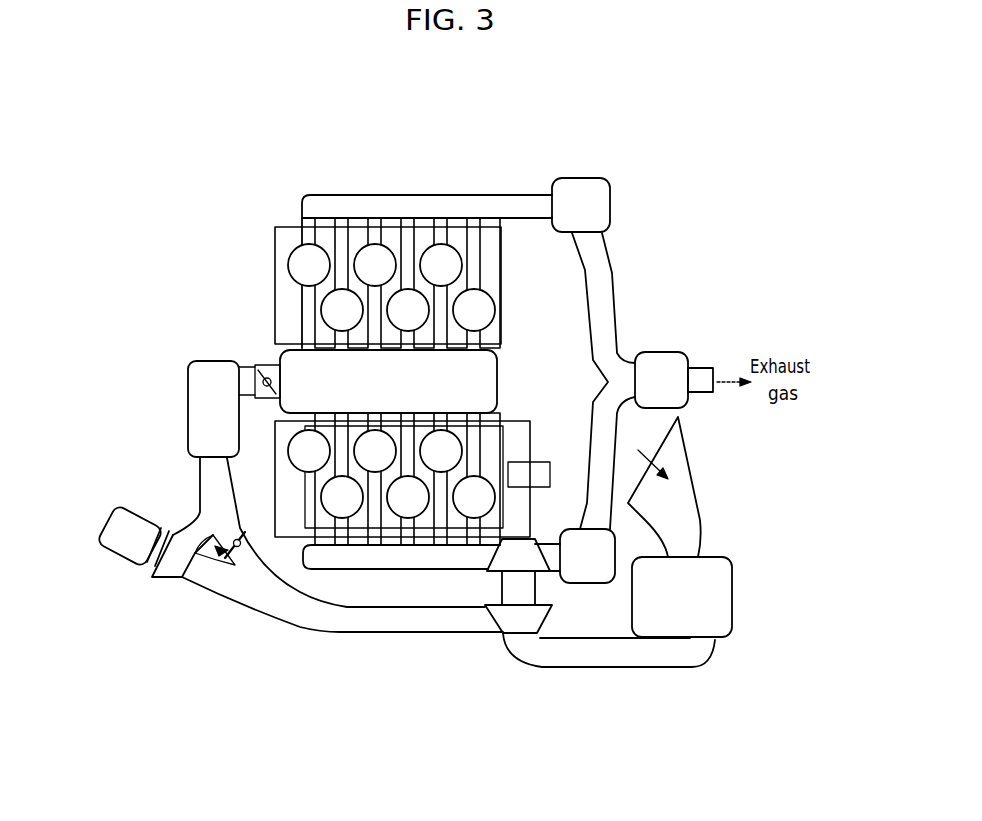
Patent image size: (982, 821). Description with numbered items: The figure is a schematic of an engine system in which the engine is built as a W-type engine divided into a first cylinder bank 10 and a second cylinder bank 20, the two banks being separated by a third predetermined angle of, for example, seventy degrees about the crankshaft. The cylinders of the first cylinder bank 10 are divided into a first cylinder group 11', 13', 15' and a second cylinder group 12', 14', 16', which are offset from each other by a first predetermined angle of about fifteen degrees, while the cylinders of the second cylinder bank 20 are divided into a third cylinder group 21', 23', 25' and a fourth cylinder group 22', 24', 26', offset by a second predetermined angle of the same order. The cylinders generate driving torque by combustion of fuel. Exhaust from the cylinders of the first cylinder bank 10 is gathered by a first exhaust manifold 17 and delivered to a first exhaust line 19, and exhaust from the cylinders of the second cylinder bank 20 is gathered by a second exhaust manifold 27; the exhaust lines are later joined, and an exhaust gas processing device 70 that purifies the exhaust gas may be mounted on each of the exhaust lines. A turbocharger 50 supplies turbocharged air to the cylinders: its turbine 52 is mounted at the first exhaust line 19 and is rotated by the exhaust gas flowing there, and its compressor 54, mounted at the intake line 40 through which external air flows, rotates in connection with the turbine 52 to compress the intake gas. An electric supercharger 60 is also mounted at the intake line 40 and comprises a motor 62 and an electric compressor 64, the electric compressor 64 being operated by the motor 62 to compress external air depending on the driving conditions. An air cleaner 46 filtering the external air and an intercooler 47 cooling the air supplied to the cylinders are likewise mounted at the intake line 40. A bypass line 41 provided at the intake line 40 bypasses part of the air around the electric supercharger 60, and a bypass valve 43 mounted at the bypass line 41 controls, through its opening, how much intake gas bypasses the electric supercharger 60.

The first cylinder bank 10 is at (498, 442).
The cylinder 11' is at (340, 477).
The cylinder 12' is at (319, 523).
The cylinder 13' is at (285, 457).
The cylinder 14' is at (408, 537).
The cylinder 15' is at (451, 427).
The cylinder 16' is at (515, 497).
The first exhaust manifold 17 is at (334, 571).
The first exhaust line 19 is at (588, 406).
The second cylinder bank 20 is at (275, 262).
The cylinder 21' is at (294, 234).
The cylinder 22' is at (300, 310).
The cylinder 23' is at (387, 219).
The cylinder 24' is at (469, 323).
The cylinder 25' is at (484, 263).
The cylinder 26' is at (501, 310).
The second exhaust manifold 27 is at (372, 195).
The intake line 40 is at (520, 667).
The bypass line 41 is at (240, 528).
The bypass valve 43 is at (203, 551).
The air cleaner 46 is at (733, 597).
The intercooler 47 is at (214, 361).
The turbocharger 50 is at (551, 664).
The turbine 52 is at (518, 555).
The compressor 54 is at (518, 620).
The electric supercharger 60 is at (184, 597).
The motor 62 is at (118, 568).
The electric compressor 64 is at (180, 578).
The exhaust gas processing device 70 is at (612, 206).